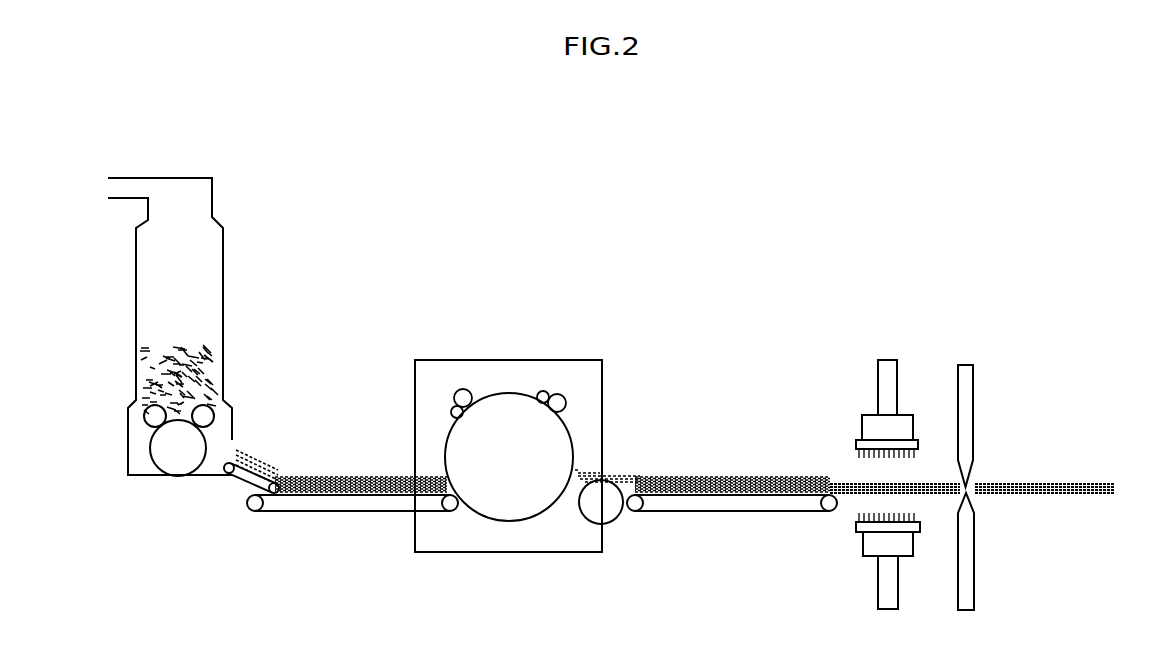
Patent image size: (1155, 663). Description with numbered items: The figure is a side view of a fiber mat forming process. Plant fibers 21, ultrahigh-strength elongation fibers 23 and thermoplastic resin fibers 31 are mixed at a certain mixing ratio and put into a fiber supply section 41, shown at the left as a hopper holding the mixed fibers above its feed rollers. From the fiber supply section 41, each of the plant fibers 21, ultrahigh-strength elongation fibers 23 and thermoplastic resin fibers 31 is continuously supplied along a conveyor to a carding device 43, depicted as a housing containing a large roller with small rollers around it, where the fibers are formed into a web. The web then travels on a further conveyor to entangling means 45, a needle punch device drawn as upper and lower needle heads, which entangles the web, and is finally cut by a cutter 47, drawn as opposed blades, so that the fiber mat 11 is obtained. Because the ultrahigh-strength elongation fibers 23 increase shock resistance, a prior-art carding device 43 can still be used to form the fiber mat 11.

The fiber mat 11 is at (1067, 483).
The plant fibers 21 is at (160, 390).
The ultrahigh-strength elongation fibers 23 is at (203, 367).
The thermoplastic resin fibers 31 is at (157, 357).
The fiber supply section 41 is at (200, 178).
The carding device 43 is at (580, 360).
The entangling means (needle punch device) 45 is at (853, 372).
The cutter 47 is at (990, 407).